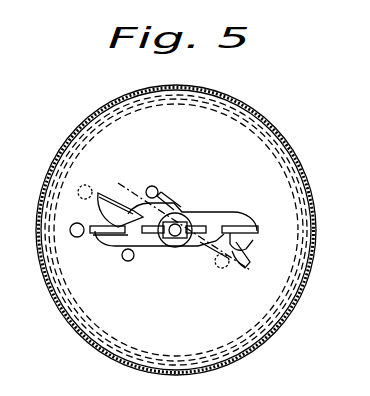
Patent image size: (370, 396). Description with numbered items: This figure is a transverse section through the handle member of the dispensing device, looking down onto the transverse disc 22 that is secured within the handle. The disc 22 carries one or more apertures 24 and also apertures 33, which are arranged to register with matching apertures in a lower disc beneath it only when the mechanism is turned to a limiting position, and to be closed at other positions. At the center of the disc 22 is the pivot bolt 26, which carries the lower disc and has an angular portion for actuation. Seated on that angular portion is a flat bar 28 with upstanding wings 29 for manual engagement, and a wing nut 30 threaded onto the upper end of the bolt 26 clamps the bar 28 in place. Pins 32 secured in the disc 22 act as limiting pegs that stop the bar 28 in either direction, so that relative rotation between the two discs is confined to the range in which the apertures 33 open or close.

The transverse disc 22 is at (178, 176).
The apertures 24 is at (158, 189).
The pivot bolt 26 is at (177, 226).
The flat bar 28 is at (235, 212).
The upstanding wings 29 is at (258, 236).
The wing nut 30 is at (206, 236).
The pins 32 is at (149, 187).
The apertures 33 is at (78, 238).